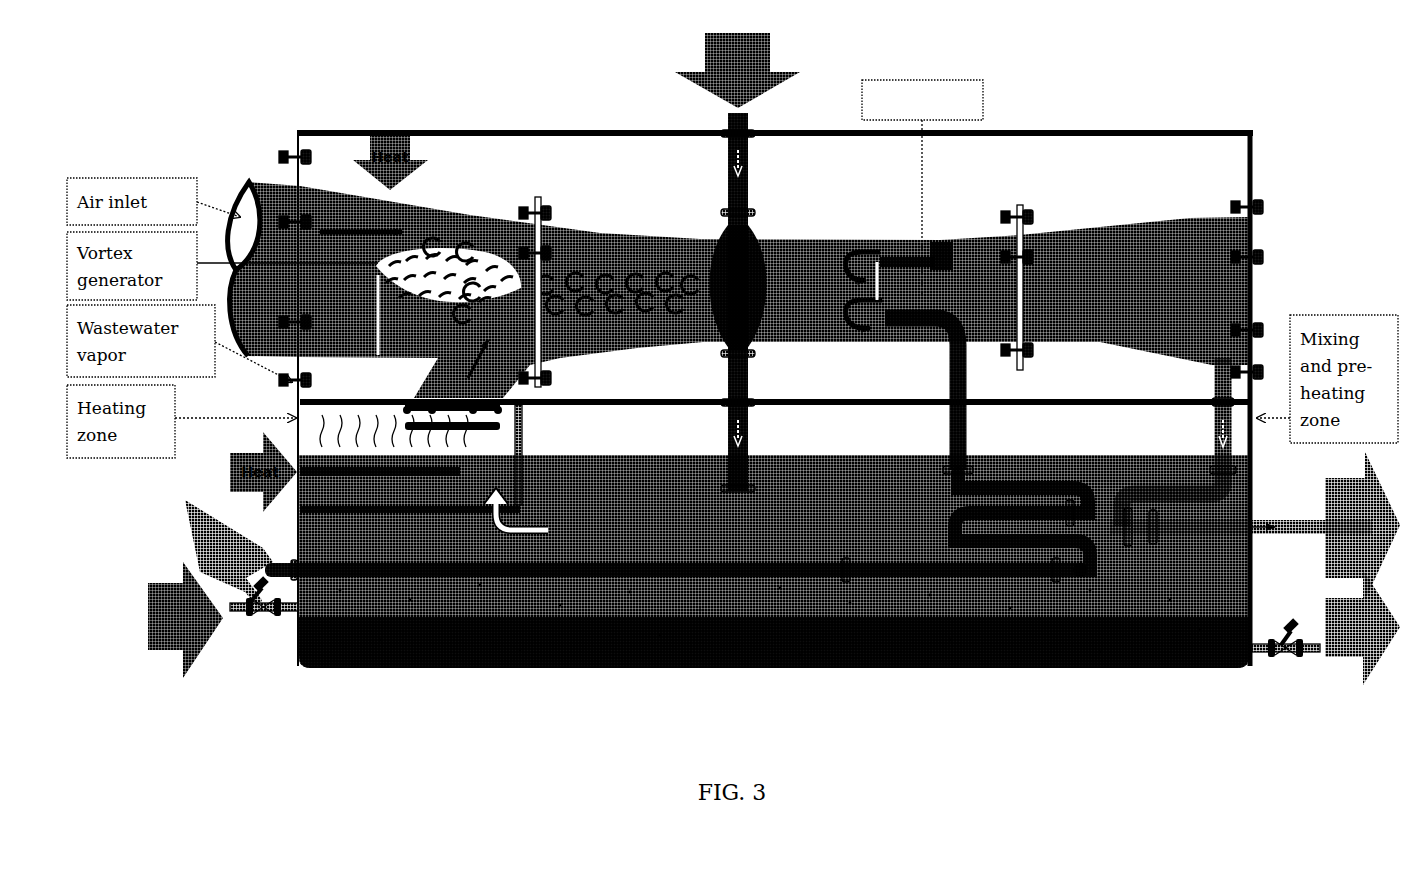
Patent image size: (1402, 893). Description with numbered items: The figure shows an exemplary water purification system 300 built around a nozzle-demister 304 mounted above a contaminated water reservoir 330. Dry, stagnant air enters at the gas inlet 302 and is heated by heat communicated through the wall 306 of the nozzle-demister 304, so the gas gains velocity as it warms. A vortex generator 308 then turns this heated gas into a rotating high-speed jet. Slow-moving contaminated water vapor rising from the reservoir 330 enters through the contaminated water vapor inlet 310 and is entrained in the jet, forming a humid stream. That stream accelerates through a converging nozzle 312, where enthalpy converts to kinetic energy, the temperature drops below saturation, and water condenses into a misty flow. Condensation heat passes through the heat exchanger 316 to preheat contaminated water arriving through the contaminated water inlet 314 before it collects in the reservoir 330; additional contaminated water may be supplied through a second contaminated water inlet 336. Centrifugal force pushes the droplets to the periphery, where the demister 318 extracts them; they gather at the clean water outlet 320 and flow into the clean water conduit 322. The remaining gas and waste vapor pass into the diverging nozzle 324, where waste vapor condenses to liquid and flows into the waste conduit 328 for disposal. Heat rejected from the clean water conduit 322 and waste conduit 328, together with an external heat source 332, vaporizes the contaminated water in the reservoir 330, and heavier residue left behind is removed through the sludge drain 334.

The water purification system 300 is at (478, 93).
The gas inlet 302 is at (236, 213).
The nozzle-demister 304 is at (487, 240).
The wall 306 is at (437, 215).
The vortex generator 308 is at (427, 262).
The contaminated water vapor inlet 310 is at (497, 382).
The converging nozzle 312 is at (603, 263).
The contaminated water inlet 314 is at (750, 117).
The heat exchanger 316 is at (766, 240).
The demister 318 is at (947, 240).
The clean water outlet 320 is at (955, 347).
The clean water conduit 322 is at (970, 432).
The diverging nozzle 324 is at (1077, 277).
The waste conduit 328 is at (1210, 425).
The contaminated water reservoir 330 is at (887, 517).
The external heat source 332 is at (352, 424).
The sludge drain 334 is at (1283, 655).
The contaminated water inlet 336 is at (278, 615).